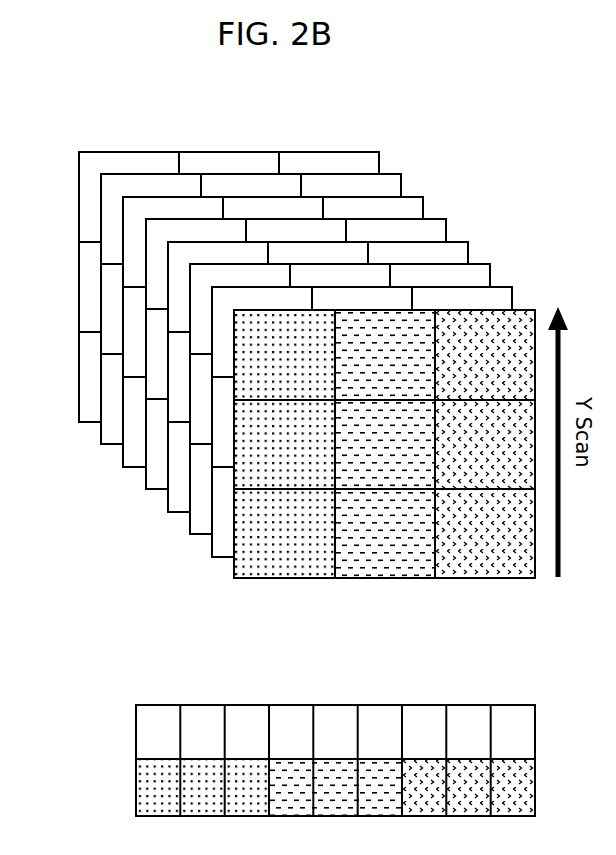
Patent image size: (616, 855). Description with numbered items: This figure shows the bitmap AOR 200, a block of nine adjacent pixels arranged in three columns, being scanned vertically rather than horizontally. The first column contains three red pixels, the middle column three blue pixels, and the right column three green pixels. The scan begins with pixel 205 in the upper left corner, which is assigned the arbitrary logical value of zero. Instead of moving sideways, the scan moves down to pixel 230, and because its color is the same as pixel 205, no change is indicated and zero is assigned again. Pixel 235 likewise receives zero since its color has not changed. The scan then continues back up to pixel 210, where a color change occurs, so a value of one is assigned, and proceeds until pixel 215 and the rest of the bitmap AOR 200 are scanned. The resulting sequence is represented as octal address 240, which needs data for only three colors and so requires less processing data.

The bitmap AOR 200 is at (90, 140).
The pixel 205 is at (248, 378).
The pixel 210 is at (388, 328).
The pixel 215 is at (505, 330).
The pixel 230 is at (257, 473).
The pixel 235 is at (257, 574).
The octal address 240 is at (140, 703).